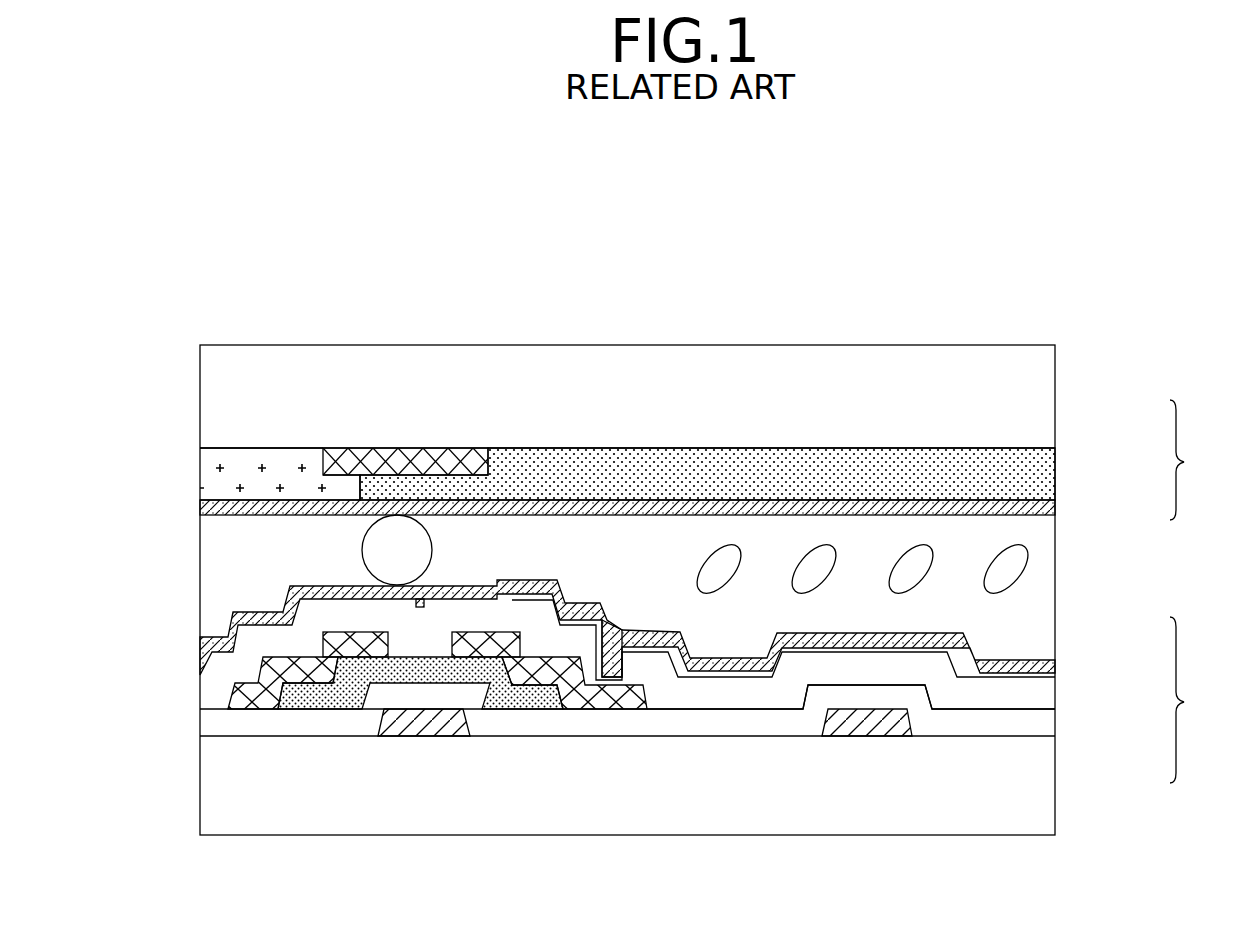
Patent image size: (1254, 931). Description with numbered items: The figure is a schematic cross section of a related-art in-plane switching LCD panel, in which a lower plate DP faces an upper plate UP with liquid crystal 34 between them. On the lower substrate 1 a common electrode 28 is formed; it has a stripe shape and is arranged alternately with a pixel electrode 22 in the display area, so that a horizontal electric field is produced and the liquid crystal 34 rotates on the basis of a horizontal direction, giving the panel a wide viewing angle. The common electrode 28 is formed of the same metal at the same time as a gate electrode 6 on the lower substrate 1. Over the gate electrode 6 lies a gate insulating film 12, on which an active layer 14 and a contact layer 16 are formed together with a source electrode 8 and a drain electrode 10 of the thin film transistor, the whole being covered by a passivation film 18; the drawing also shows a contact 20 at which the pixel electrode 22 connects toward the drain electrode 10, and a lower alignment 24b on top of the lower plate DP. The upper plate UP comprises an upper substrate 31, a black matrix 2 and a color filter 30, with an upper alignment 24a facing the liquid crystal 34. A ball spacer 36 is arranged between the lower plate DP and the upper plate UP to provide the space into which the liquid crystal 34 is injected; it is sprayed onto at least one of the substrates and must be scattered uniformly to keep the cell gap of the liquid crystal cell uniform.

The lower substrate 1 is at (1050, 765).
The black matrix 2 is at (416, 448).
The gate electrode 6 is at (418, 736).
The source electrode 8 is at (250, 709).
The drain electrode 10 is at (580, 702).
The gate insulating film 12 is at (1050, 722).
The active layer 14 is at (332, 709).
The contact layer 16 is at (512, 682).
The passivation film 18 is at (1050, 695).
The contact hole 20 is at (622, 632).
The pixel electrode 22 is at (1055, 668).
The upper alignment 24a is at (1055, 508).
The lower alignment 24b is at (1055, 655).
The common electrode 28 is at (864, 736).
The color filter 30 is at (1055, 467).
The upper substrate 31 is at (1055, 407).
The liquid crystal 34 is at (1010, 563).
The ball spacer 36 is at (432, 550).
The upper plate UP is at (1198, 460).
The lower plate DP is at (1199, 700).